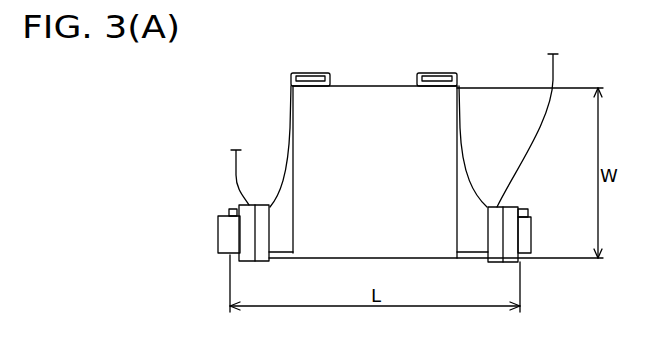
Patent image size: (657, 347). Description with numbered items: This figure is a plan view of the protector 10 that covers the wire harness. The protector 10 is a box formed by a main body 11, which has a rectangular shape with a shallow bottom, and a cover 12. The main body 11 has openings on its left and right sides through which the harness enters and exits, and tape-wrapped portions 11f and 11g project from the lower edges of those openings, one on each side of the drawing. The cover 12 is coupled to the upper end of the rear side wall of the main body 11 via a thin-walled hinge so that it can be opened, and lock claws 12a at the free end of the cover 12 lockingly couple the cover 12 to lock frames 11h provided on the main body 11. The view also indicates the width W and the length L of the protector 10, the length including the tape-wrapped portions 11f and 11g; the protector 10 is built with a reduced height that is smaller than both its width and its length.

The protector 10 is at (360, 41).
The main body 11 is at (458, 176).
The tape-wrapped portion 11f is at (218, 232).
The tape-wrapped portion 11g is at (531, 232).
The lock frame 11h is at (291, 80).
The cover 12 is at (393, 120).
The lock claw 12a is at (302, 79).